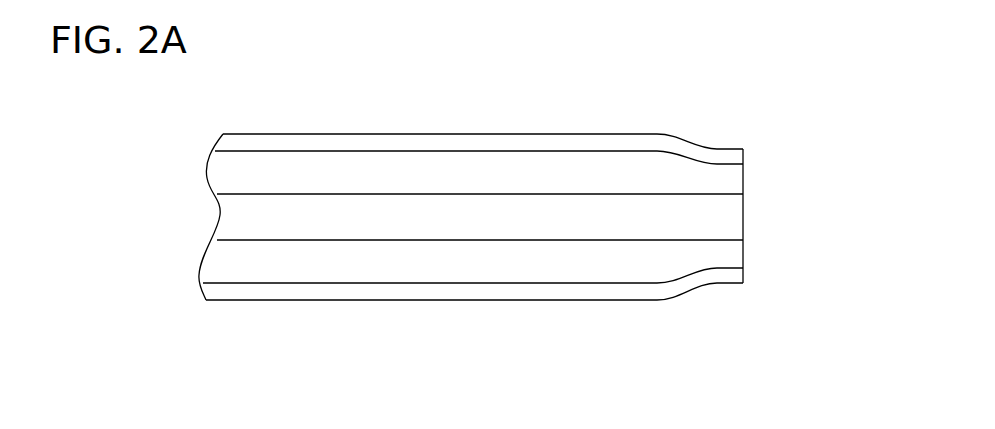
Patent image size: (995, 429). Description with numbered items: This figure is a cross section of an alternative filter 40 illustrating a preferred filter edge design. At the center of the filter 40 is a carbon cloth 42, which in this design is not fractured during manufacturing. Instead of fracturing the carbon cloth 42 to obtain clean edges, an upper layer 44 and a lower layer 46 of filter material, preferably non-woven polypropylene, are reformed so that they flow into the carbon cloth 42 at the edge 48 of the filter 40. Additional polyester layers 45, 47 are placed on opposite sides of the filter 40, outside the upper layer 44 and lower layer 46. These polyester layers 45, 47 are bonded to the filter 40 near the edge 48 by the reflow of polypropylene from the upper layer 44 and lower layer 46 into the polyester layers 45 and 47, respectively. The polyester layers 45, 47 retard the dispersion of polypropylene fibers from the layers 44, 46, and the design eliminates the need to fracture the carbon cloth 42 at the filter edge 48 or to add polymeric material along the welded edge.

The filter 40 is at (377, 125).
The carbon cloth 42 is at (243, 213).
The upper layer 44 is at (252, 167).
The polyester layer 45 is at (573, 133).
The lower layer 46 is at (232, 260).
The polyester layer 47 is at (628, 295).
The edge 48 is at (718, 227).